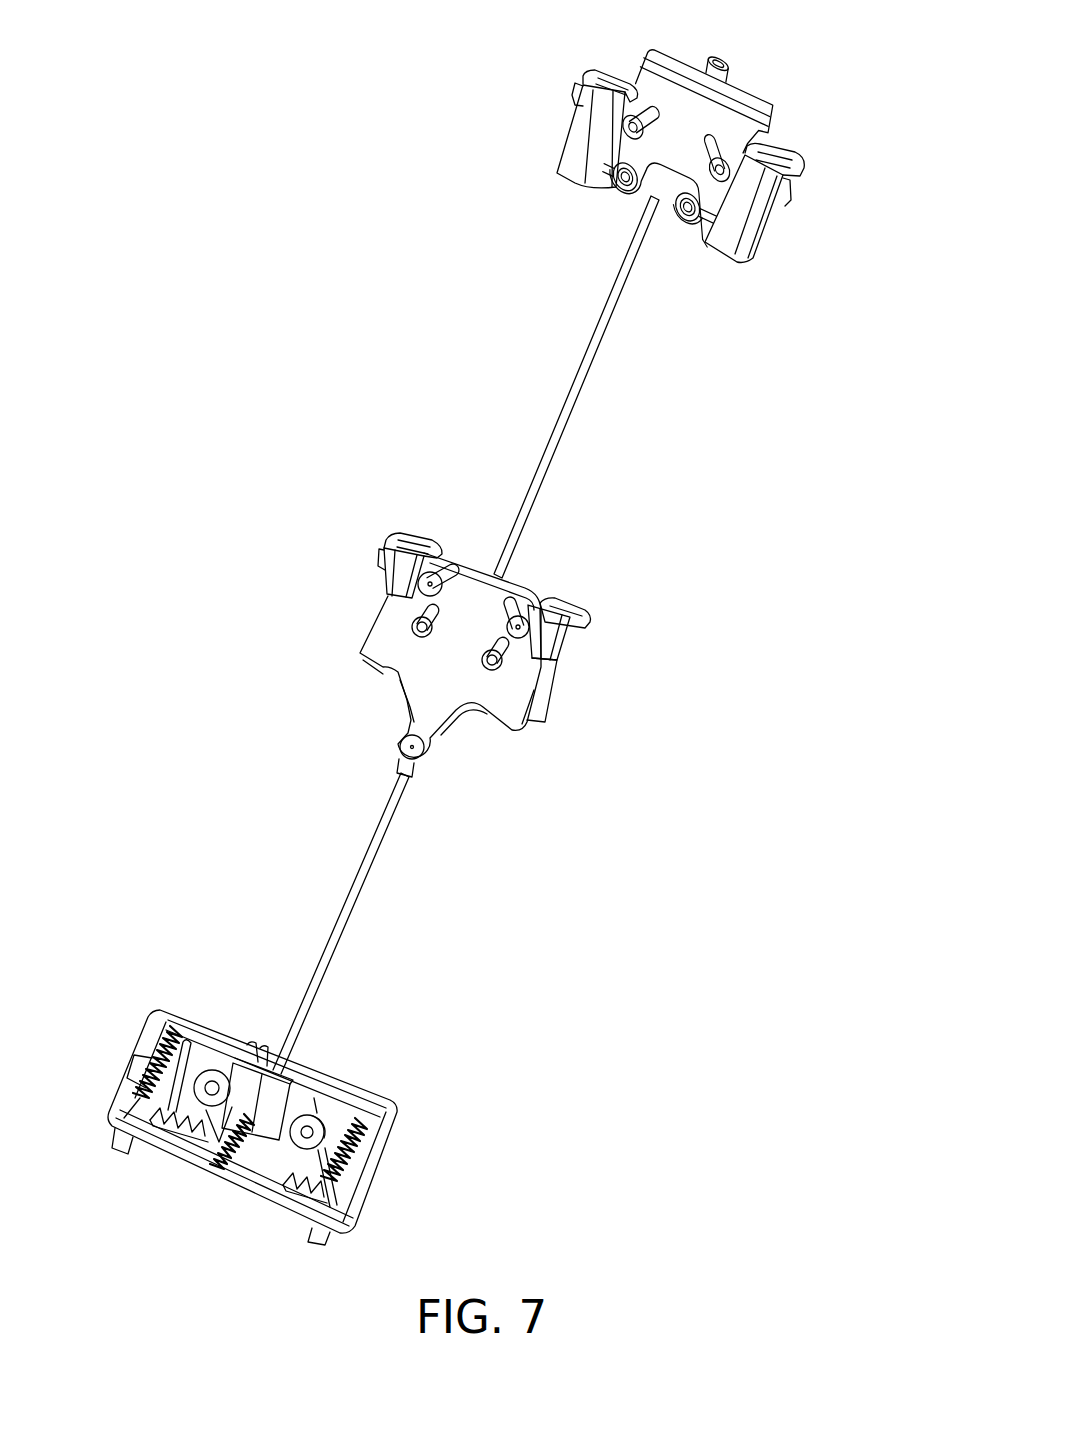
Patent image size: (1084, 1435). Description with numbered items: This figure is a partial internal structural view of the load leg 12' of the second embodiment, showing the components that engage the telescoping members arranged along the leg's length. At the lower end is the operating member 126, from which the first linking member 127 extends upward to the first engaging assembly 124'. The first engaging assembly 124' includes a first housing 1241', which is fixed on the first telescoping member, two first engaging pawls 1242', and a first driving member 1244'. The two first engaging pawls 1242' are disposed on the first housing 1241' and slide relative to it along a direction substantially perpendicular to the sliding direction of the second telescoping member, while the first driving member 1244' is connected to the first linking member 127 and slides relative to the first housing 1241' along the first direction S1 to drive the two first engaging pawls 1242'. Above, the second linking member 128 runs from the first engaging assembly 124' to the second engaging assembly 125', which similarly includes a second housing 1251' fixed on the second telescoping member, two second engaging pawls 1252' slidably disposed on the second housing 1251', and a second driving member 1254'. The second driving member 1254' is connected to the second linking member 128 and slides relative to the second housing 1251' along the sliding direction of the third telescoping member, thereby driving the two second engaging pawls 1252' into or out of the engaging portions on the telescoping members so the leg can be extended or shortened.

The load leg 12' is at (460, 625).
The first direction S1 is at (310, 394).
The second engaging assembly 125' is at (682, 198).
The second driving member 1254' is at (732, 152).
The second housing 1251' is at (552, 136).
The second engaging pawls 1252' is at (702, 145).
The second linking member 128 is at (569, 401).
The first engaging assembly 124' is at (475, 695).
The first driving member 1244' is at (504, 649).
The first engaging pawls 1242' is at (500, 580).
The first housing 1241' is at (600, 699).
The first linking member 127 is at (357, 880).
The operating member 126 is at (244, 1085).